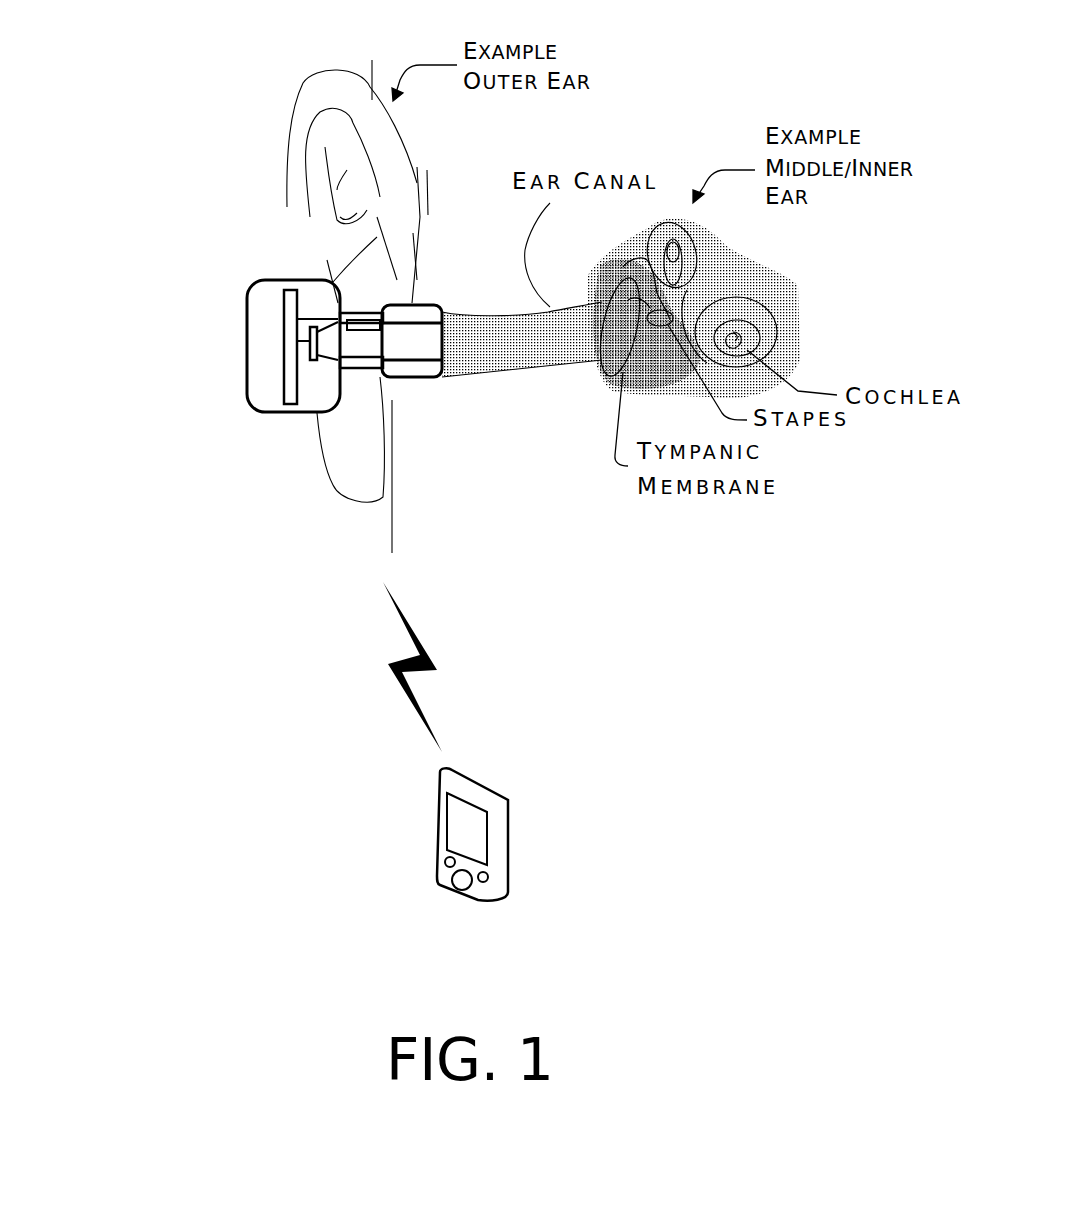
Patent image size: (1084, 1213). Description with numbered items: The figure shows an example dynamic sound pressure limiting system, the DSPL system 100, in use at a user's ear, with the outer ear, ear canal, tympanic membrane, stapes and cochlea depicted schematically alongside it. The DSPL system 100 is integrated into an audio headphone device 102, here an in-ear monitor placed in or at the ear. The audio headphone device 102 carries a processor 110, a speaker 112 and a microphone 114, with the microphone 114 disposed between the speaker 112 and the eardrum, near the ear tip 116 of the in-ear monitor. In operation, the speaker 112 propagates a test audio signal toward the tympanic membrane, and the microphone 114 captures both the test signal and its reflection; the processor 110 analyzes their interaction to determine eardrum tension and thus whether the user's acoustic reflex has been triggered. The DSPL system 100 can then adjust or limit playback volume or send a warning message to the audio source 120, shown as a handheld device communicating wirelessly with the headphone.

The DSPL system 100 is at (220, 95).
The audio headphone device 102 is at (247, 315).
The processor 110 is at (248, 385).
The speaker 112 is at (316, 412).
The microphone 114 is at (358, 302).
The ear tip 116 is at (440, 381).
The audio source 120 is at (505, 850).